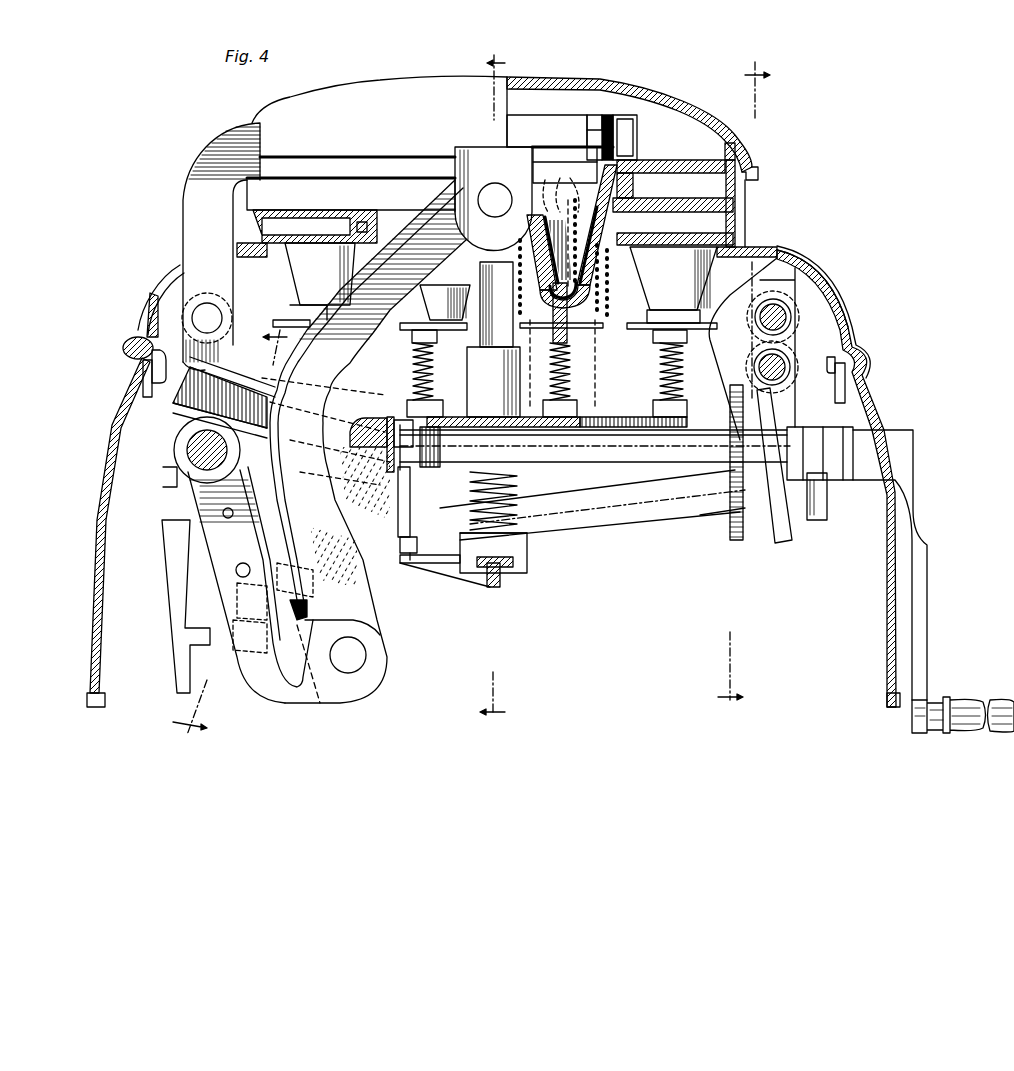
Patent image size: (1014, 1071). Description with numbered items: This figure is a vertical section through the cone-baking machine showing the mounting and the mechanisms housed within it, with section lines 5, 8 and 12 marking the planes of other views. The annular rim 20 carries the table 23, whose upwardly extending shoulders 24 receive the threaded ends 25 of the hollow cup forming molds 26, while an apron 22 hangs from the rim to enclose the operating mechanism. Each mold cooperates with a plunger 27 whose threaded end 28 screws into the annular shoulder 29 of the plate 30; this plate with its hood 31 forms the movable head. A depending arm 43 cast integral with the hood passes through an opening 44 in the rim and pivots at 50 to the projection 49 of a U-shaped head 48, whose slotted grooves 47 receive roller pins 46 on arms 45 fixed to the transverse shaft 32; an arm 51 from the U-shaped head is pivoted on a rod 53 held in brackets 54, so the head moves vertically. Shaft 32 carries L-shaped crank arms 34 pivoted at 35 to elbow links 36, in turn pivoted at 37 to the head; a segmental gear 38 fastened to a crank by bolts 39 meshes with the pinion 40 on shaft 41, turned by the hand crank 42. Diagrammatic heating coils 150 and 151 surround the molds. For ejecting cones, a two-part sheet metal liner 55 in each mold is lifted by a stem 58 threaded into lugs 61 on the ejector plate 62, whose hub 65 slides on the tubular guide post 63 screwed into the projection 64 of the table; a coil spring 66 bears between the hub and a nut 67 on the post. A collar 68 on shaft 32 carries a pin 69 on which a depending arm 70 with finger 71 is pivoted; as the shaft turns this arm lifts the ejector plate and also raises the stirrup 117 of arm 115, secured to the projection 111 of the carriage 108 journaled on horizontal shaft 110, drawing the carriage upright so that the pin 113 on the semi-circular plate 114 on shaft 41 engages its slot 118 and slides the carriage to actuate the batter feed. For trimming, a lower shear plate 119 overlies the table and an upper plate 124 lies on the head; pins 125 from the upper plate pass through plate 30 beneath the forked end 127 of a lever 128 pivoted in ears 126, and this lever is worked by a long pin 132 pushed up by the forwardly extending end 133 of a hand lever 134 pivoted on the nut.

The section line 5- 5 is at (492, 385).
The section line 8- 8 is at (744, 382).
The section line 12- 12 is at (230, 543).
The annular rim 20 is at (836, 265).
The apron 22 is at (887, 602).
The plate or table 23 is at (677, 243).
The annular shoulders 24 is at (600, 278).
The upper threaded ends 25 is at (655, 168).
The hollow cup forming molds 26 is at (598, 300).
The plunger or opposite mold-part 27 is at (568, 200).
The threaded upper end of plunger 28 is at (593, 170).
The downwardly projecting annular shoulder 29 is at (640, 170).
The plate 30 is at (685, 160).
The cover or hood 31 is at (588, 80).
The transversely positioned shaft 32 is at (200, 457).
The L-shaped crank arms 34 is at (273, 665).
The pivotal connection 35 is at (352, 656).
The elbow shaped link 36 is at (368, 441).
The pivotal connection 37 is at (496, 198).
The segmental gear 38 is at (250, 657).
The rivets or bolts 39 is at (243, 563).
The pinion 40 is at (408, 553).
The shaft 41 is at (622, 465).
The hand crank 42 is at (918, 500).
The depending arm 43 is at (200, 222).
The opening 44 is at (163, 277).
The spaced apart arms 45 is at (177, 400).
The roller pins 46 is at (367, 418).
The slotted grooves 47 is at (180, 382).
The U-shaped head 48 is at (230, 355).
The upwardly extending projection 49 is at (187, 347).
The pivotal connection 50 is at (212, 316).
The arm 51 is at (514, 554).
The rod 53 is at (785, 318).
The brackets 54 is at (772, 258).
The sheet metal liner 55 is at (498, 318).
The stem 58 is at (572, 362).
The upstanding lugs 61 is at (578, 405).
The plate 62 is at (607, 420).
The tubular guide post 63 is at (470, 312).
The hub shaped projection 64 is at (487, 277).
The hub 65 is at (468, 375).
The coil spring 66 is at (462, 540).
The nut 67 is at (528, 545).
The collar 68 is at (200, 492).
The pin 69 is at (165, 482).
The depending arm 70 is at (170, 580).
The finger 71 is at (463, 430).
The carriage 108 is at (780, 405).
The horizontal shaft 110 is at (790, 365).
The projection 111 is at (782, 530).
The pin 113 is at (787, 400).
The semi-circular plate 114 is at (737, 545).
The arm 115 is at (685, 513).
The stirrup 117 is at (465, 470).
The slot 118 is at (717, 533).
The lower plate 119 is at (680, 205).
The plate 124 is at (748, 197).
The pins 125 is at (620, 120).
The upstanding ears 126 is at (640, 125).
The forked end 127 is at (608, 118).
The lever 128 is at (556, 122).
The long pin 132 is at (432, 575).
The forwardly extending end 133 is at (452, 580).
The lever 134 is at (500, 575).
The electric heating coils 150 is at (557, 365).
The second series of heating coils 151 is at (540, 150).